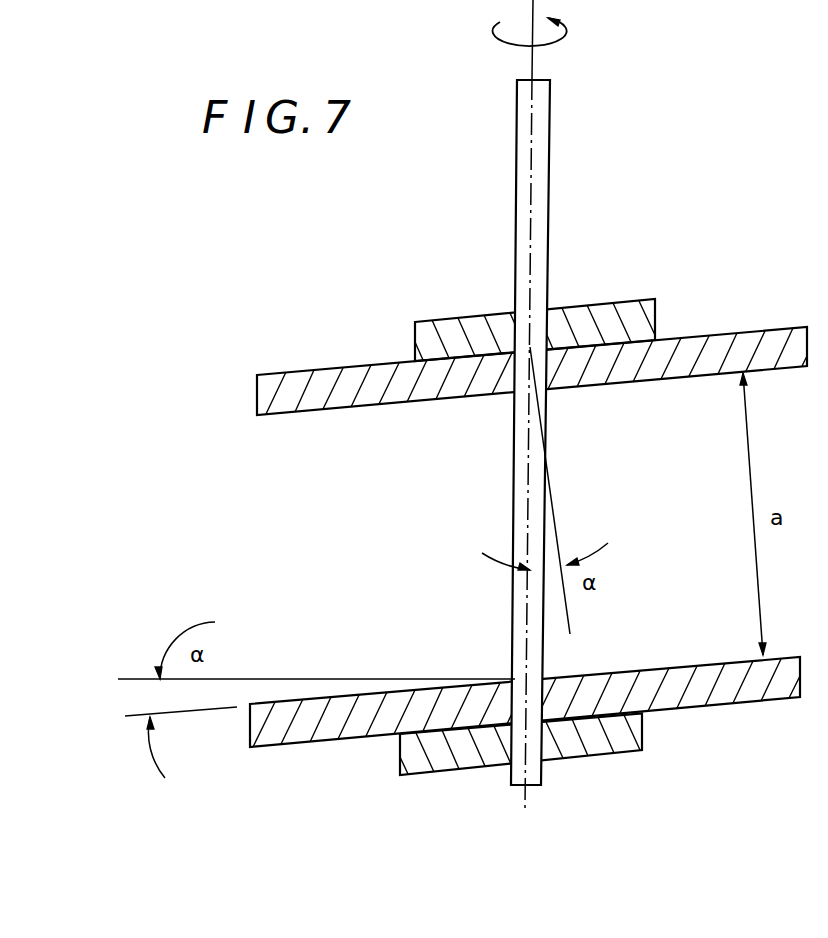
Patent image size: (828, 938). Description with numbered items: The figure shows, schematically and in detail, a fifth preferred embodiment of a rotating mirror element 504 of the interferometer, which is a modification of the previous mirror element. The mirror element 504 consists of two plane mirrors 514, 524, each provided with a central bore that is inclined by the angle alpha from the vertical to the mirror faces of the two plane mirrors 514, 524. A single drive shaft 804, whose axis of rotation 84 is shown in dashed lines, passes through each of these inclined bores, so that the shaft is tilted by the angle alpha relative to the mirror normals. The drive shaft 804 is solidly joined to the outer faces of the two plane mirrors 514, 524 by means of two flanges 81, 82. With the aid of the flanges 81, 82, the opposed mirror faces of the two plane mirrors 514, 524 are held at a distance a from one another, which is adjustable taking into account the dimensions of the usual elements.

The mirror element 504 is at (400, 516).
The plane mirror 514 is at (740, 332).
The plane mirror 524 is at (312, 741).
The drive shaft 804 is at (550, 226).
The axis of rotation 84 is at (533, 68).
The flange 81 is at (415, 322).
The flange 82 is at (597, 755).